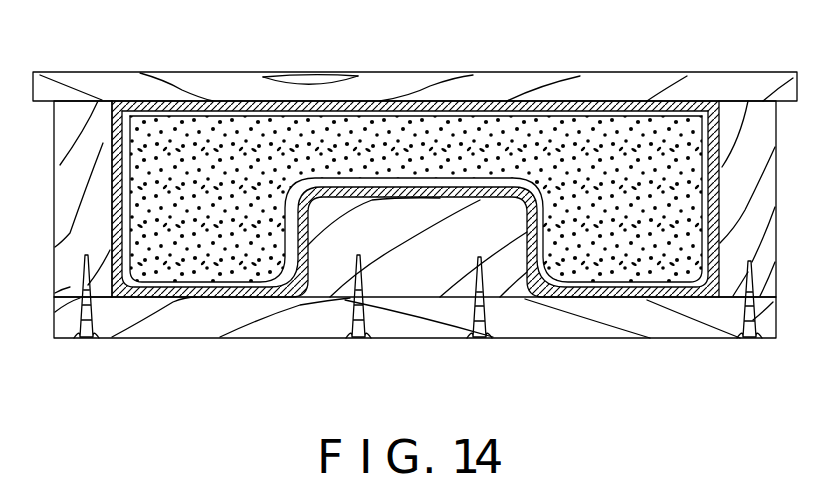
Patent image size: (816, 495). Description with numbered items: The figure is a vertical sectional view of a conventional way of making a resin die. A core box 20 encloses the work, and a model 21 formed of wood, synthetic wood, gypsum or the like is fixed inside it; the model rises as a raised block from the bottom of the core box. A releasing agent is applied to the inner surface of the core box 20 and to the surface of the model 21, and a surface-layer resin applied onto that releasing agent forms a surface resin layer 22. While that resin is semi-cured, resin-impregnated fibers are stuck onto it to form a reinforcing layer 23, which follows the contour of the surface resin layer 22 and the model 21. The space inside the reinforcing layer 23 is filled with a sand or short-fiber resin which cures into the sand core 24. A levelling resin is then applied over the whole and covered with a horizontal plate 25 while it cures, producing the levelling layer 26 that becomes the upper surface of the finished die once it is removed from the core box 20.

The core box 20 is at (736, 112).
The model 21 is at (420, 290).
The surface resin layer 22 is at (588, 300).
The reinforcing layer 23 is at (675, 287).
The sand core 24 is at (499, 125).
The horizontal plate 25 is at (651, 82).
The levelling layer 26 is at (593, 110).